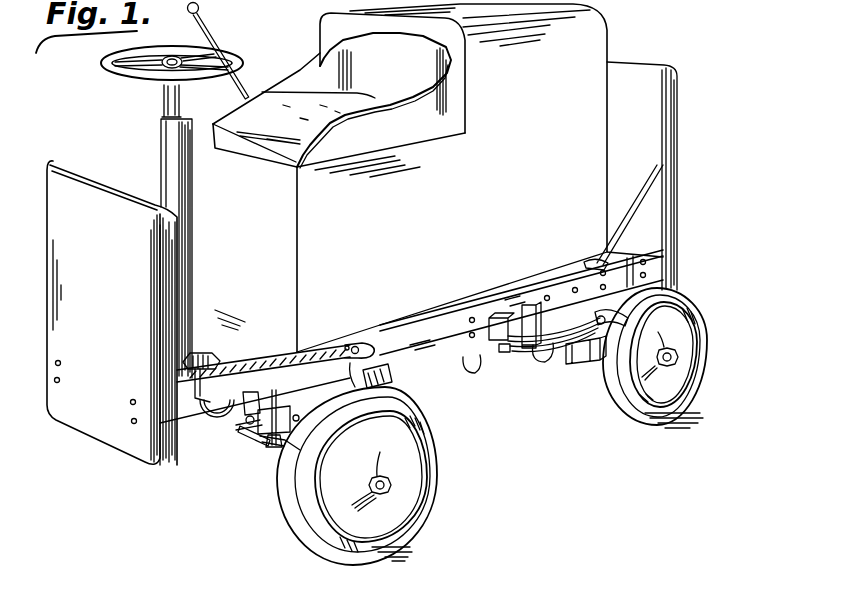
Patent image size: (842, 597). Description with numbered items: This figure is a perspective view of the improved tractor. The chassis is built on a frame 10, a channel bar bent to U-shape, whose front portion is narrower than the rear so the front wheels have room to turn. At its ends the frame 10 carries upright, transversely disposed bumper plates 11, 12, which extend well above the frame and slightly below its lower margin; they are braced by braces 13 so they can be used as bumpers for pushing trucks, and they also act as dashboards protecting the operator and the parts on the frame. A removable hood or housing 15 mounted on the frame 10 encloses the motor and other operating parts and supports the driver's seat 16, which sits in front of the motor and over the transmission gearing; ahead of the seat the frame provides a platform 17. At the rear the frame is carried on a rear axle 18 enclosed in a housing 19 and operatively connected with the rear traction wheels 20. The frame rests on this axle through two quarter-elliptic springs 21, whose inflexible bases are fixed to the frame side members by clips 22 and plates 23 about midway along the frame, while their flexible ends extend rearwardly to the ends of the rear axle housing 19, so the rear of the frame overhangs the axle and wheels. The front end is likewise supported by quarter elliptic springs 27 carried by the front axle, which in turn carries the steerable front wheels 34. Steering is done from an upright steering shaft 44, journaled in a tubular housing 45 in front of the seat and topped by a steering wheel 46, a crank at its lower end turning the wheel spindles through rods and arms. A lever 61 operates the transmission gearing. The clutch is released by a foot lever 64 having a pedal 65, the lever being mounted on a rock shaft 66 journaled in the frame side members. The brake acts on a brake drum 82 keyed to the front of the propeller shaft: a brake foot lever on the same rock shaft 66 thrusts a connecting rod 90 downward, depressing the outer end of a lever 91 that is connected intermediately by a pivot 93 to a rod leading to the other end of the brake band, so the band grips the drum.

The frame 10 is at (430, 355).
The bumper plate 11 is at (97, 434).
The bumper plate 12 is at (677, 212).
The brace 13 is at (645, 201).
The hood or housing 15 is at (594, 75).
The driver's seat 16 is at (279, 112).
The platform 17 is at (230, 345).
The rear axle 18 is at (680, 358).
The rear axle housing 19 is at (577, 348).
The rear traction wheel 20 is at (690, 398).
The quarter-elliptic spring 21 is at (586, 352).
The clip 22 is at (528, 302).
The plate 23 is at (508, 352).
The quarter elliptic spring 27 is at (381, 375).
The front wheel 34 is at (415, 462).
The steering shaft 44 is at (163, 105).
The tubular housing 45 is at (161, 133).
The steering wheel 46 is at (135, 85).
The lever 61 is at (213, 49).
The foot lever 64 is at (218, 400).
The pedal 65 is at (200, 360).
The rock shaft 66 is at (358, 347).
The brake drum 82 is at (222, 426).
The connecting rod 90 is at (288, 413).
The lever 91 is at (263, 441).
The pivot 93 is at (247, 428).